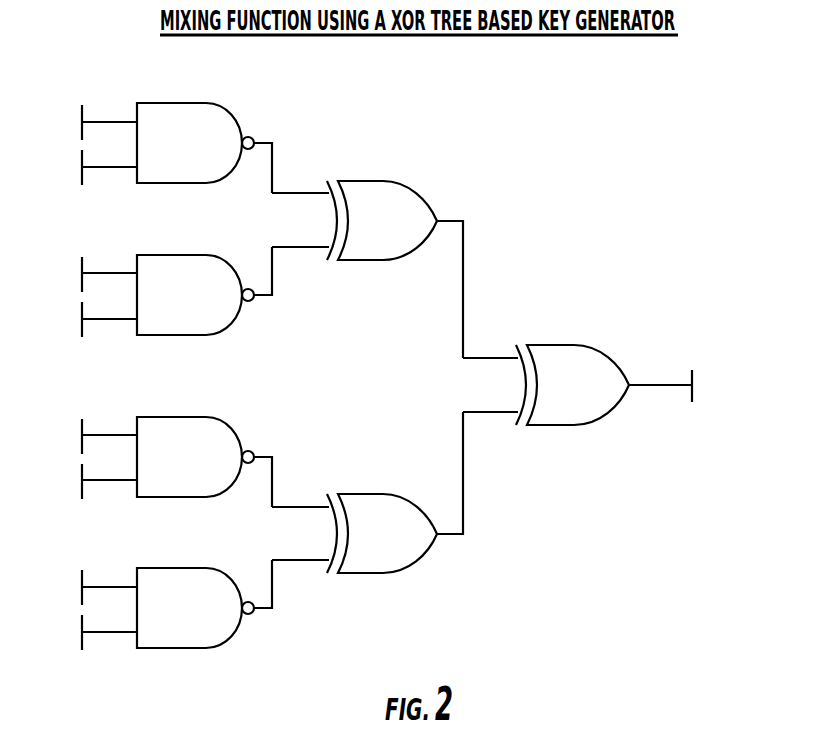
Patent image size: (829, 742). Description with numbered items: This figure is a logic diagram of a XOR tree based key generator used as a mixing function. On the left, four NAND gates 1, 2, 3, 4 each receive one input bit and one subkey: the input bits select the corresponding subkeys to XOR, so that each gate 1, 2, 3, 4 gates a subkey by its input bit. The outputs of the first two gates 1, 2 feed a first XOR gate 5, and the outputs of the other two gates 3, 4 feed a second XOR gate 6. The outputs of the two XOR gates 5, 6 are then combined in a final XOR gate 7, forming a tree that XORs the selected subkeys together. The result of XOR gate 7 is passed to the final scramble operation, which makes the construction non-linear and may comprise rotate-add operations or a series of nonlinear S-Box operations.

The NAND gate for inputs K1 and A1 1 is at (157, 163).
The NAND gate for inputs K2 and A2 2 is at (157, 310).
The NAND gate for inputs K3 and A3 3 is at (157, 476).
The NAND gate for inputs K4 and A4 4 is at (157, 623).
The XOR gate combining outputs of gates 1 and 2 5 is at (367, 269).
The XOR gate combining outputs of gates 3 and 4 6 is at (367, 512).
The XOR gate producing SCRAMB1 output 7 is at (619, 404).